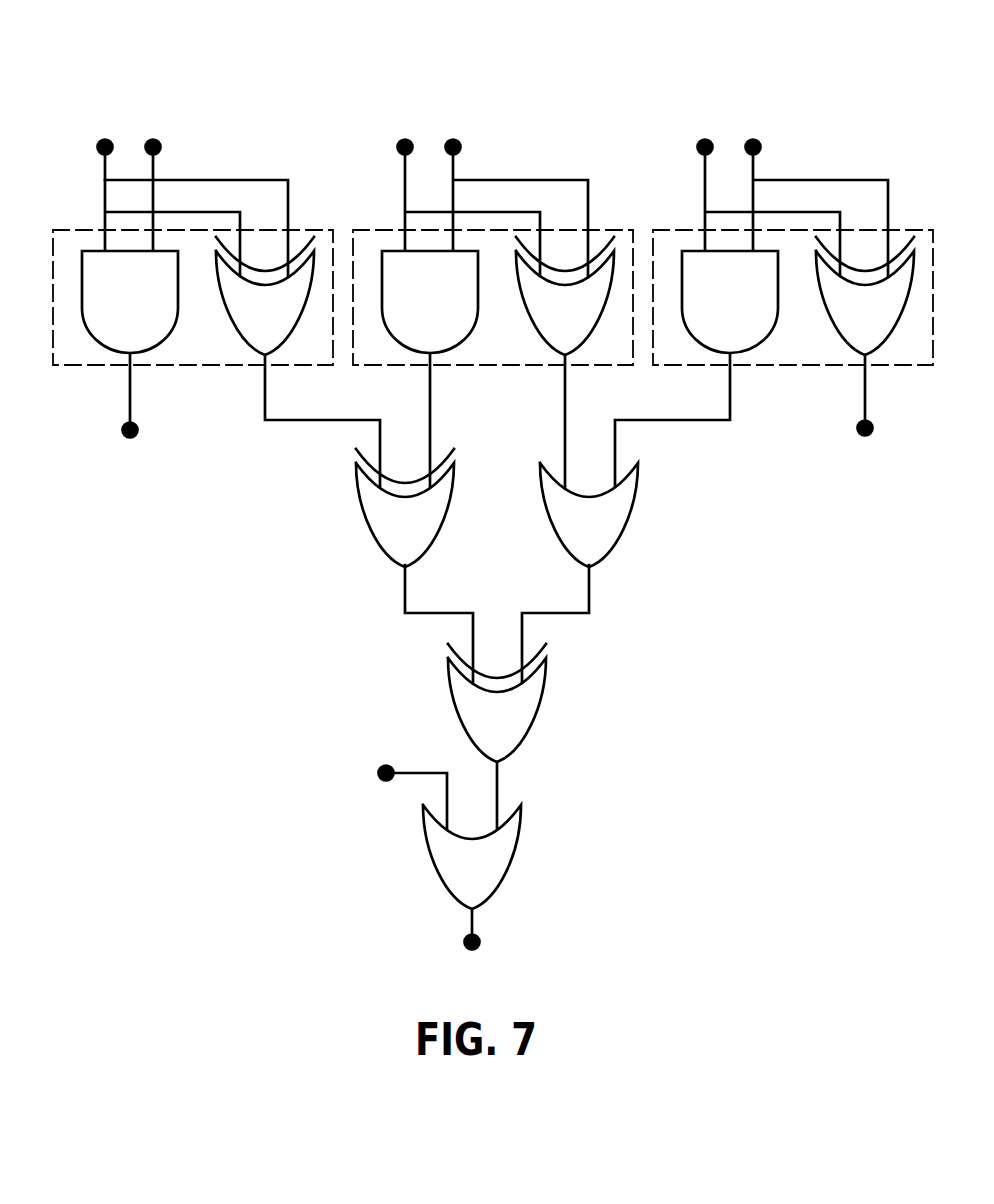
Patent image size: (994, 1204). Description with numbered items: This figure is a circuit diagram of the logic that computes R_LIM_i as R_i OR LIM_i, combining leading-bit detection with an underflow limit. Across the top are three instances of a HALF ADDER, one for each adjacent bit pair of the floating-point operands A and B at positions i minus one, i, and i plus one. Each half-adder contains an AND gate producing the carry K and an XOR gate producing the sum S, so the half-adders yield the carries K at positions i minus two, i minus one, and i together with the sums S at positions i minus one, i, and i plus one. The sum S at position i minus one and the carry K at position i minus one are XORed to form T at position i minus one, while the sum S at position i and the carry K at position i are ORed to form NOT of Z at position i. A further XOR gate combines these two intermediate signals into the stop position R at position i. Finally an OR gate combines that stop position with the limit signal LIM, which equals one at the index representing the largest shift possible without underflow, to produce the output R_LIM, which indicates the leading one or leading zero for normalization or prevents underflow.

The half-adder HALF ADDER is at (660, 228).